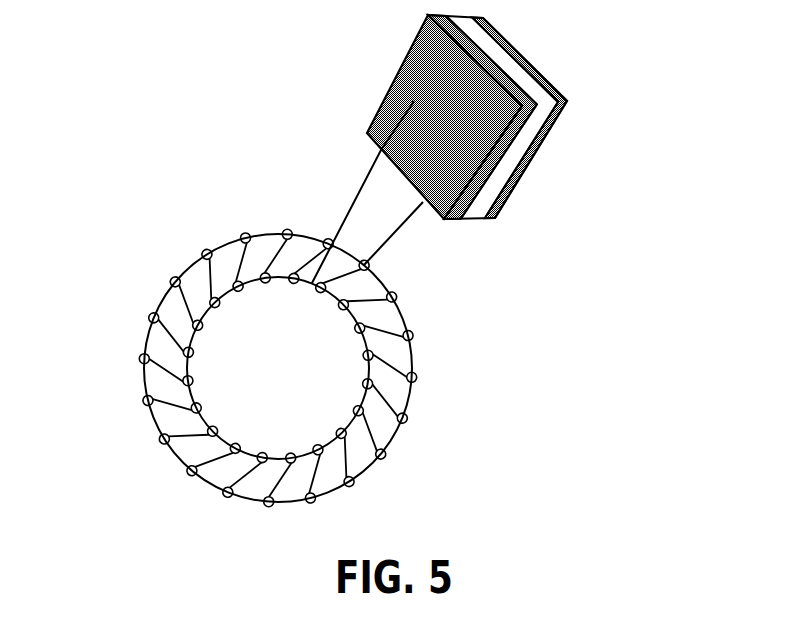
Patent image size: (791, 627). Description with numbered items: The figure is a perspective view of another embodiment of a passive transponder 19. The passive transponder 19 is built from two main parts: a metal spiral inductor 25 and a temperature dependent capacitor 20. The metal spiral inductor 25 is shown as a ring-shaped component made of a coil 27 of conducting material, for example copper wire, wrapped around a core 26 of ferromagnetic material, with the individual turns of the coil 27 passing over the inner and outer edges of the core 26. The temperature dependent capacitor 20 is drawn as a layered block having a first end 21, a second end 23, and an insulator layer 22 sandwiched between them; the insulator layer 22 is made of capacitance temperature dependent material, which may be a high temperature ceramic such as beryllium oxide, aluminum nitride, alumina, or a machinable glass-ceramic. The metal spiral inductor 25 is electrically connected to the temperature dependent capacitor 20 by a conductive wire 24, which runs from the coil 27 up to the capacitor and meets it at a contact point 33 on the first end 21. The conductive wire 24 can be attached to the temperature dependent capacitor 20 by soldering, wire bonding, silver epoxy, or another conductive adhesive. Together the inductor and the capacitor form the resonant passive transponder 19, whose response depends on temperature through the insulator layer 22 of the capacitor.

The passive transponder 19 is at (492, 338).
The temperature dependent capacitor 20 is at (586, 160).
The first end 21 is at (418, 62).
The insulator layer 22 is at (553, 120).
The second end 23 is at (553, 77).
The conductive wire 24 is at (400, 228).
The metal spiral inductor 25 is at (133, 477).
The core 26 is at (173, 317).
The coil 27 is at (138, 357).
The contact point 33 is at (413, 102).